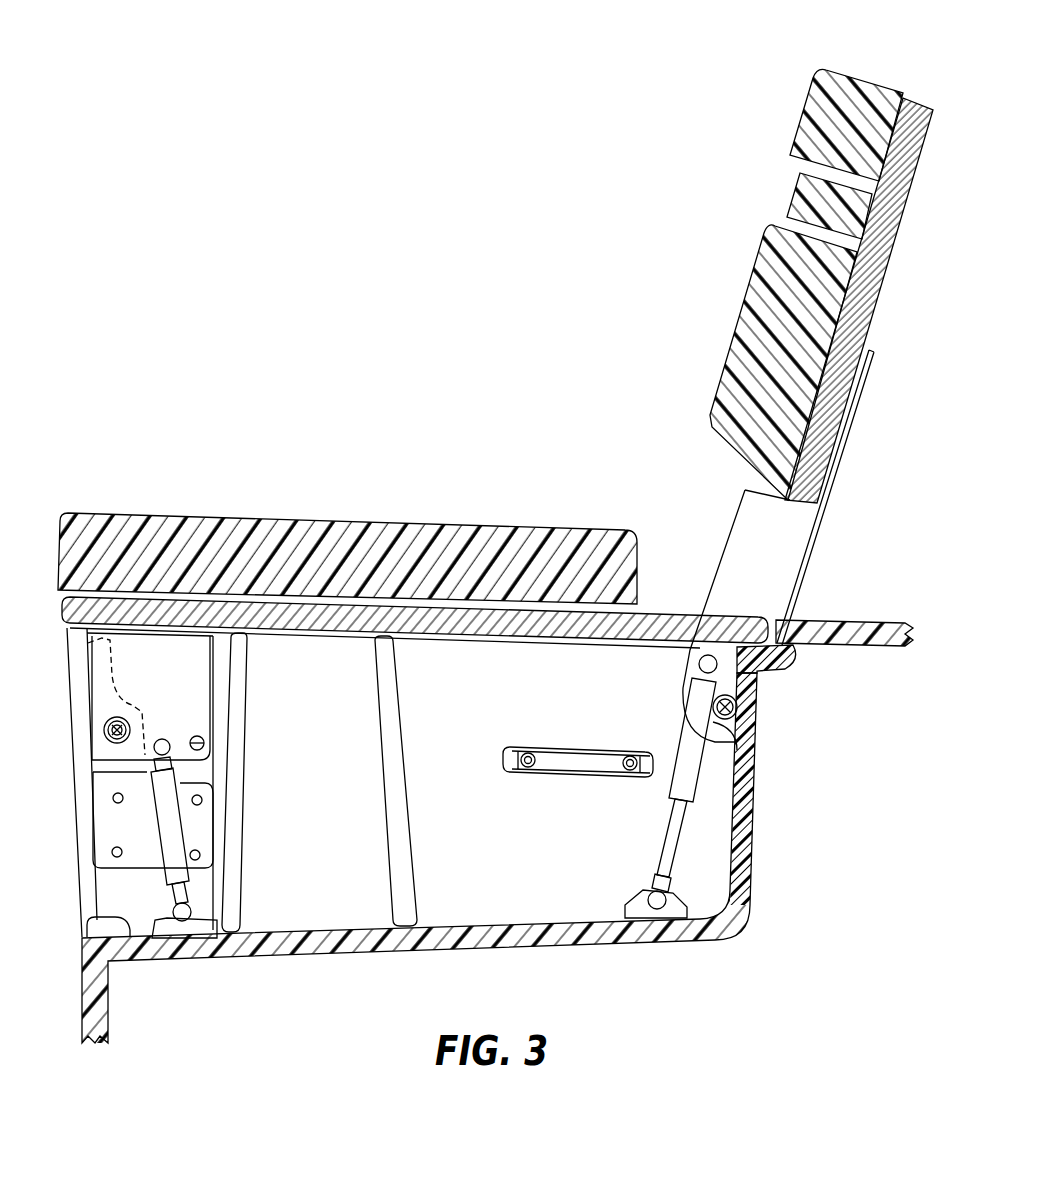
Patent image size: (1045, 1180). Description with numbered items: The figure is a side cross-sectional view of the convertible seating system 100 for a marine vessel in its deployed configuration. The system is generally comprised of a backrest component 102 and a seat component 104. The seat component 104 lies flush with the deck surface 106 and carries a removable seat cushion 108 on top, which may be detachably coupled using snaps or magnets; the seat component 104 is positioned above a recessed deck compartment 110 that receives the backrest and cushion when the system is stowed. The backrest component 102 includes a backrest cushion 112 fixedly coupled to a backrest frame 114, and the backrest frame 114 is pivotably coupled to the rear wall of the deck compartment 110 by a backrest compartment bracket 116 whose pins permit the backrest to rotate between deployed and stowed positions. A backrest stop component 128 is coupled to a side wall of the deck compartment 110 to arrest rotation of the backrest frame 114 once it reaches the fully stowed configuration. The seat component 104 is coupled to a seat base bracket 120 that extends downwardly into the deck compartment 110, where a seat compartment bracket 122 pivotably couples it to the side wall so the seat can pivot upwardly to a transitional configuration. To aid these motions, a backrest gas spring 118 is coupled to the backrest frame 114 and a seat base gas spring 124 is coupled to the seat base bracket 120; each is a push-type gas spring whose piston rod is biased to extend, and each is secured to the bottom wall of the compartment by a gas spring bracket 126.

The convertible seating system 100 is at (229, 211).
The backrest component 102 is at (853, 67).
The seat component 104 is at (280, 600).
The deck surface 106 is at (845, 620).
The seat cushion 108 is at (383, 545).
The deck compartment 110 is at (461, 892).
The backrest cushion 112 is at (800, 103).
The backrest frame 114 is at (762, 537).
The backrest compartment bracket 116 is at (756, 772).
The backrest gas spring 118 is at (670, 843).
The seat base bracket 120 is at (160, 668).
The seat compartment bracket 122 is at (130, 820).
The seat base gas spring 124 is at (160, 845).
The gas spring bracket 126 is at (168, 923).
The backrest stop component 128 is at (572, 760).